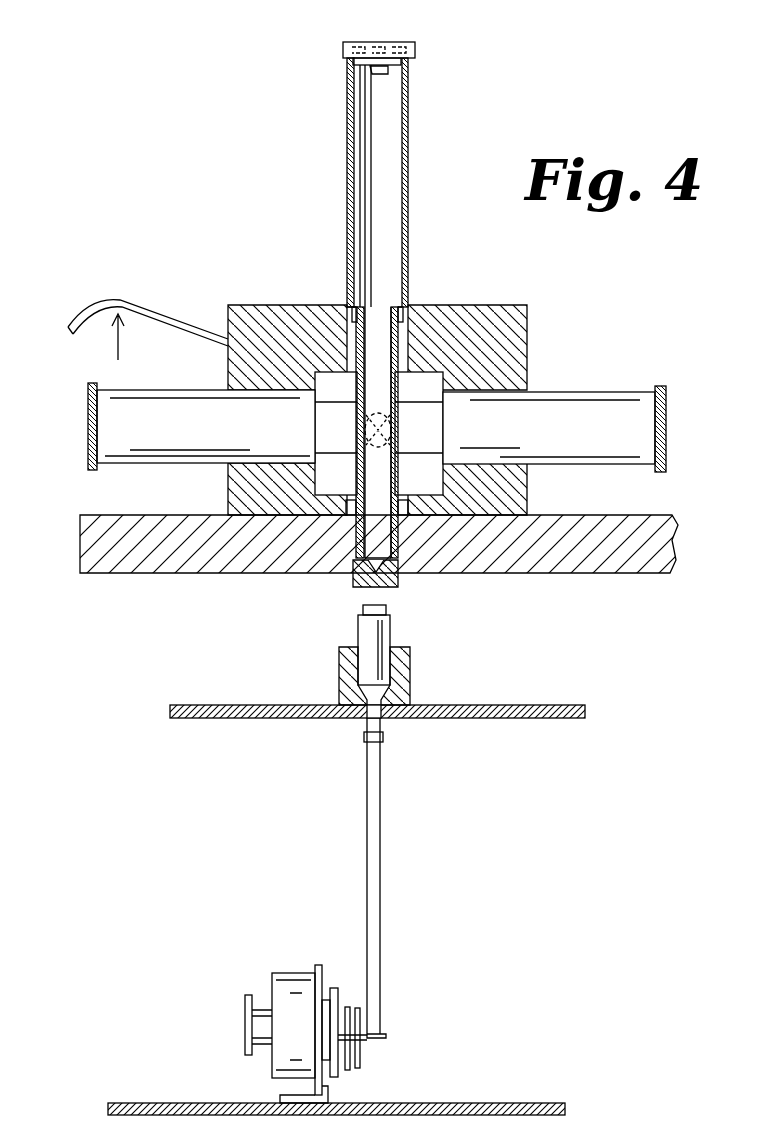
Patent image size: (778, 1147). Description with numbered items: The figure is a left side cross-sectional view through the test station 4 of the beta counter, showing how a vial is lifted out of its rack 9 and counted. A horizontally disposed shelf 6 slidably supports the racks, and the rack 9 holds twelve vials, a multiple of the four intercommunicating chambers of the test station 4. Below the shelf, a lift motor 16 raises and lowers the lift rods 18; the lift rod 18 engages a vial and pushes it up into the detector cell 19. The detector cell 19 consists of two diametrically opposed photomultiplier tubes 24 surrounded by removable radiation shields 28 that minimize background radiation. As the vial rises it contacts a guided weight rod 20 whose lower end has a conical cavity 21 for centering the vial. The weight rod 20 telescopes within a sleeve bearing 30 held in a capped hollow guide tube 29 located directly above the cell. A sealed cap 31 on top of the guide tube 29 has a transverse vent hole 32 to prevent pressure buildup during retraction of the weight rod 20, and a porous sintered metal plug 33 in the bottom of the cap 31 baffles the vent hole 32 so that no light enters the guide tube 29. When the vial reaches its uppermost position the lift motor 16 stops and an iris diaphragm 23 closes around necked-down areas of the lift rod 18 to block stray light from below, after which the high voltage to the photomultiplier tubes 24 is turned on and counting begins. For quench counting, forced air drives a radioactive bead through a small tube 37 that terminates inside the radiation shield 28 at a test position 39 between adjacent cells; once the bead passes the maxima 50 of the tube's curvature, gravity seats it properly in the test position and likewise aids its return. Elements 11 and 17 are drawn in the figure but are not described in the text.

The test station 4 is at (210, 663).
The shelf 6 is at (504, 720).
The rack 9 is at (410, 672).
The coupling 11 is at (372, 636).
The lift motor 16 is at (272, 978).
The drive discs 17 is at (360, 1038).
The lift rod 18 is at (380, 882).
The detector cell 19 is at (383, 413).
The guided weight rod 20 is at (350, 535).
The conical cavity 21 is at (398, 580).
The iris diaphragm 23 is at (398, 517).
The photomultiplier tube 24 is at (186, 372).
The radiation shield 28 is at (527, 322).
The guide tube 29 is at (406, 224).
The sleeve bearing 30 is at (405, 330).
The sealed cap 31 is at (415, 42).
The vent hole 32 is at (420, 48).
The porous sintered metal plug 33 is at (388, 70).
The tube 37 is at (166, 306).
The test position 39 is at (383, 440).
The maxima of curvature 50 is at (112, 352).